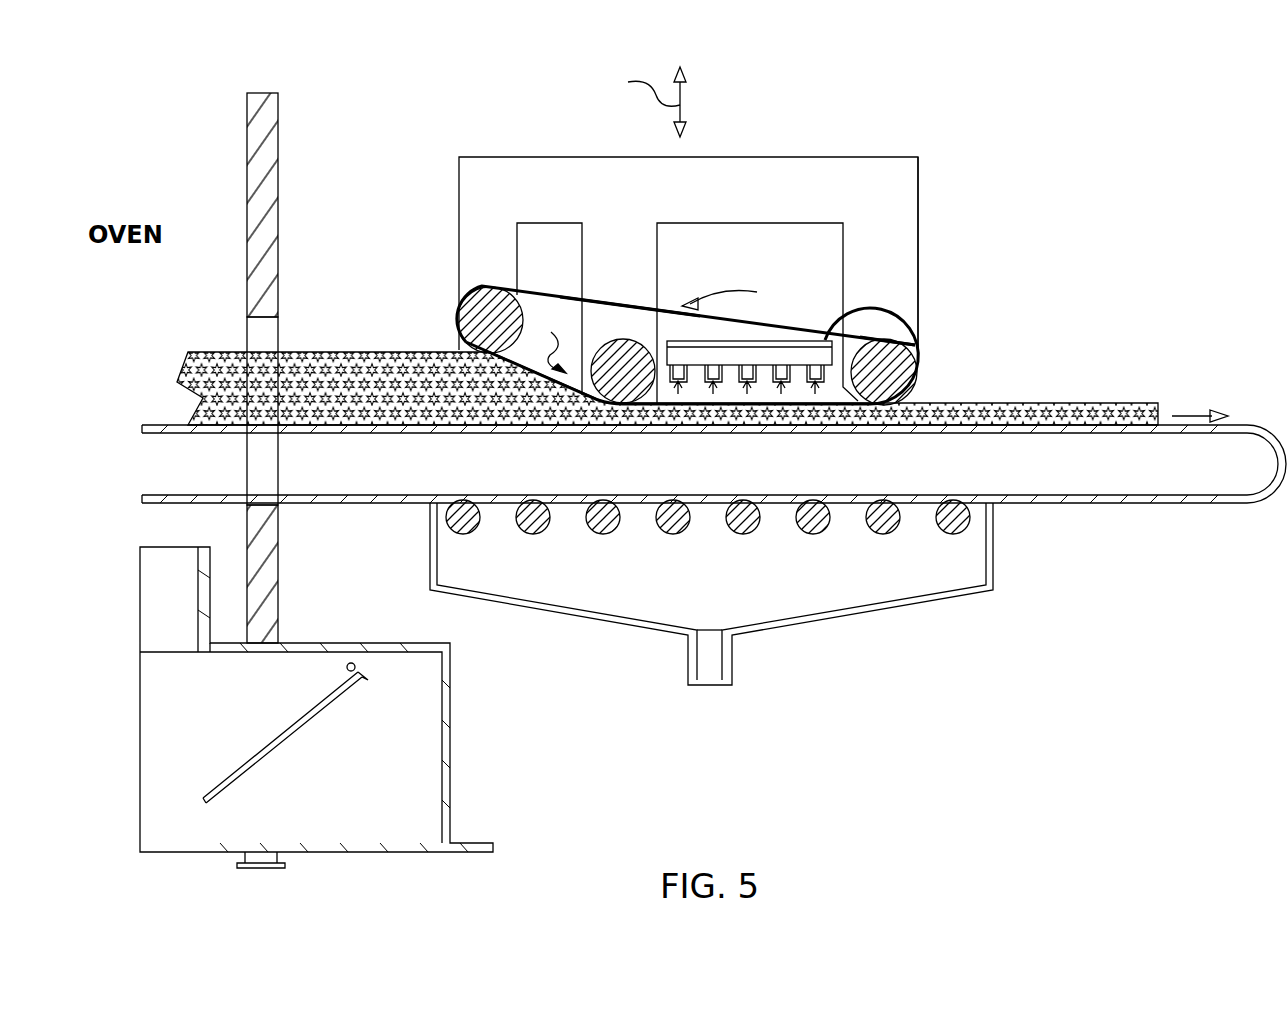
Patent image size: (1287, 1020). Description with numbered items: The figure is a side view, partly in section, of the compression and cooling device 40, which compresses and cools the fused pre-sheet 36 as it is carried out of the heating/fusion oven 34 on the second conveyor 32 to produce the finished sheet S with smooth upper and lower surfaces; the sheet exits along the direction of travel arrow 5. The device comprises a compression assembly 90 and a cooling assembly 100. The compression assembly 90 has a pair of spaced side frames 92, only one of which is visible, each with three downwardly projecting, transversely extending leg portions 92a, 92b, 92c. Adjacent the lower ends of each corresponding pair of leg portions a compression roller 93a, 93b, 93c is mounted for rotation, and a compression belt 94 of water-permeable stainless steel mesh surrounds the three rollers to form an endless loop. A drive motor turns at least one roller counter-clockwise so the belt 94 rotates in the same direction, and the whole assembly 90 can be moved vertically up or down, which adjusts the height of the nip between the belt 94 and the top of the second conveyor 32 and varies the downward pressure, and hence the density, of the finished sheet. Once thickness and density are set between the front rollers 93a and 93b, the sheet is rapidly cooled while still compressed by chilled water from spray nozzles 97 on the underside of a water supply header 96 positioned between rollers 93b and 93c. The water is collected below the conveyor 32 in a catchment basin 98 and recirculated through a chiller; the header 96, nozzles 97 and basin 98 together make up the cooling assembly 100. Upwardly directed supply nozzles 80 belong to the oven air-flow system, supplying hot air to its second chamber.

The direction of travel arrow 5 is at (1083, 405).
The second conveyor 32 is at (160, 425).
The heating/fusion oven 34 is at (280, 150).
The fused pre-sheet 36 is at (220, 352).
The compression and cooling device 40 is at (841, 132).
The upwardly directed supply nozzles 80 is at (176, 556).
The compression assembly 90 is at (492, 284).
The side frames 92 is at (755, 170).
The leg portion 92a is at (460, 237).
The leg portion 92b is at (658, 267).
The leg portion 92c is at (918, 275).
The compression roller 93a is at (480, 315).
The compression roller 93b is at (620, 385).
The compression roller 93c is at (883, 383).
The compression belt 94 is at (608, 300).
The water supply header 96 is at (905, 318).
The spray nozzles 97 is at (723, 386).
The catchment basin 98 is at (993, 536).
The cooling assembly 100 is at (764, 332).